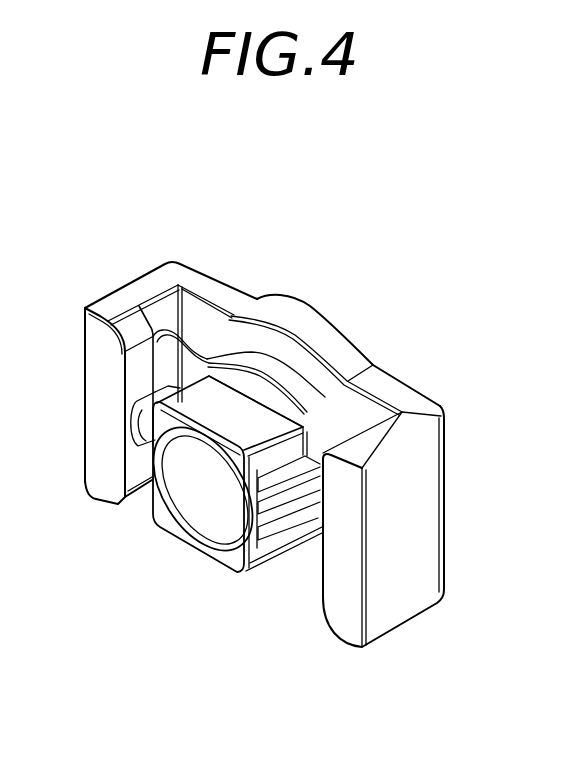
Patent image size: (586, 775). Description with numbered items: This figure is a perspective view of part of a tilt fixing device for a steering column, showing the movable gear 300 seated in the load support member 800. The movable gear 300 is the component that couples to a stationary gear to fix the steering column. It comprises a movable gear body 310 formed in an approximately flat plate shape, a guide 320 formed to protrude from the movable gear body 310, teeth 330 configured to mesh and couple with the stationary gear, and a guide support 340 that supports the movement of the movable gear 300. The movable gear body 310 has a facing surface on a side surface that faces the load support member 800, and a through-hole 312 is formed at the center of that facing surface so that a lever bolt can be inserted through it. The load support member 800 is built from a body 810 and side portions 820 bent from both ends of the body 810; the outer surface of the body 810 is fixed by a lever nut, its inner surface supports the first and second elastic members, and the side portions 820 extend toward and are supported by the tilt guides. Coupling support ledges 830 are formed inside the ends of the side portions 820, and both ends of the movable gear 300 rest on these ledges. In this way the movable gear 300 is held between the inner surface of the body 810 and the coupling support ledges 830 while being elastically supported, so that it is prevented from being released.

The movable gear 300 is at (189, 454).
The movable gear body 310 is at (253, 364).
The through-hole 312 is at (218, 496).
The guide 320 is at (238, 422).
The teeth 330 is at (284, 507).
The guide support 340 is at (137, 430).
The load support member 800 is at (305, 468).
The body 810 is at (340, 352).
The side portions 820 is at (413, 505).
The coupling support ledges 830 is at (135, 331).